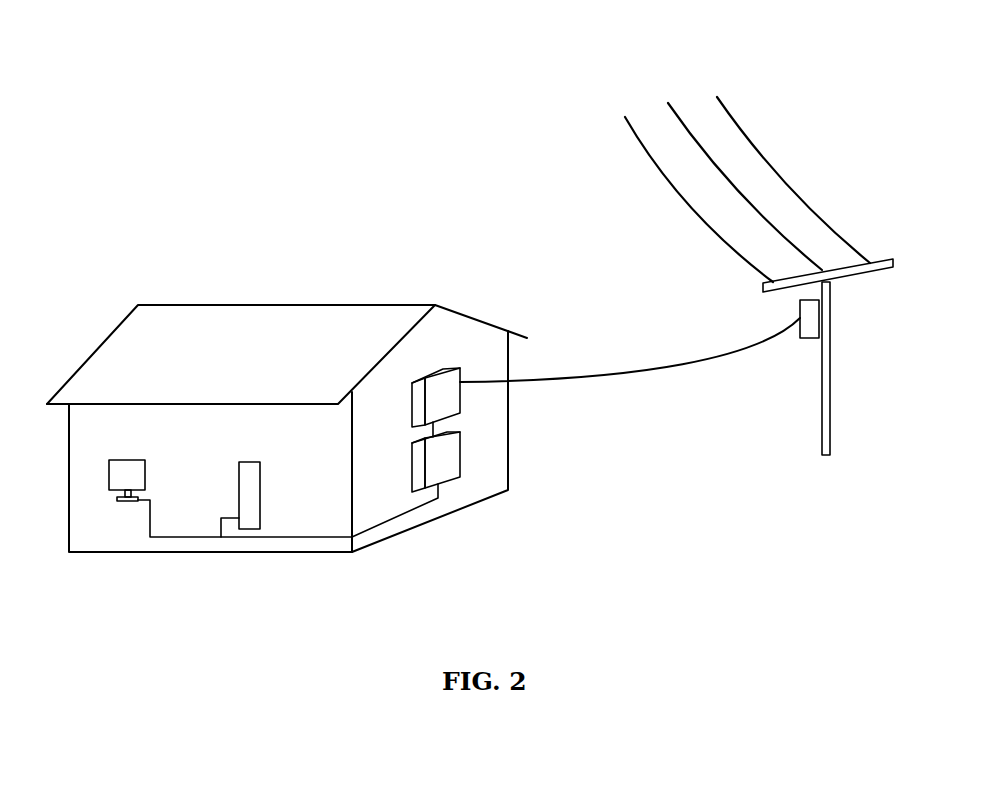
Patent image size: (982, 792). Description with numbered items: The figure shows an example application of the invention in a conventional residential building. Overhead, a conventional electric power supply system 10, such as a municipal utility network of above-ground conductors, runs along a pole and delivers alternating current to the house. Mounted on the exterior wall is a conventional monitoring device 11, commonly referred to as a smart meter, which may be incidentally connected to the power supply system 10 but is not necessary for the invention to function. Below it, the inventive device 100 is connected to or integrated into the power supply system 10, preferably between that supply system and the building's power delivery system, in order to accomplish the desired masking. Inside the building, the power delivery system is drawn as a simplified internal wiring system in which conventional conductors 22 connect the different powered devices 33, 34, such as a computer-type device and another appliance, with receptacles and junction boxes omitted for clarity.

The electric power supply system 10 is at (590, 76).
The monitoring device 11 is at (497, 401).
The inventive device 100 is at (463, 460).
The conductors 22 is at (277, 536).
The powered device 33 is at (260, 483).
The powered device 34 is at (142, 460).